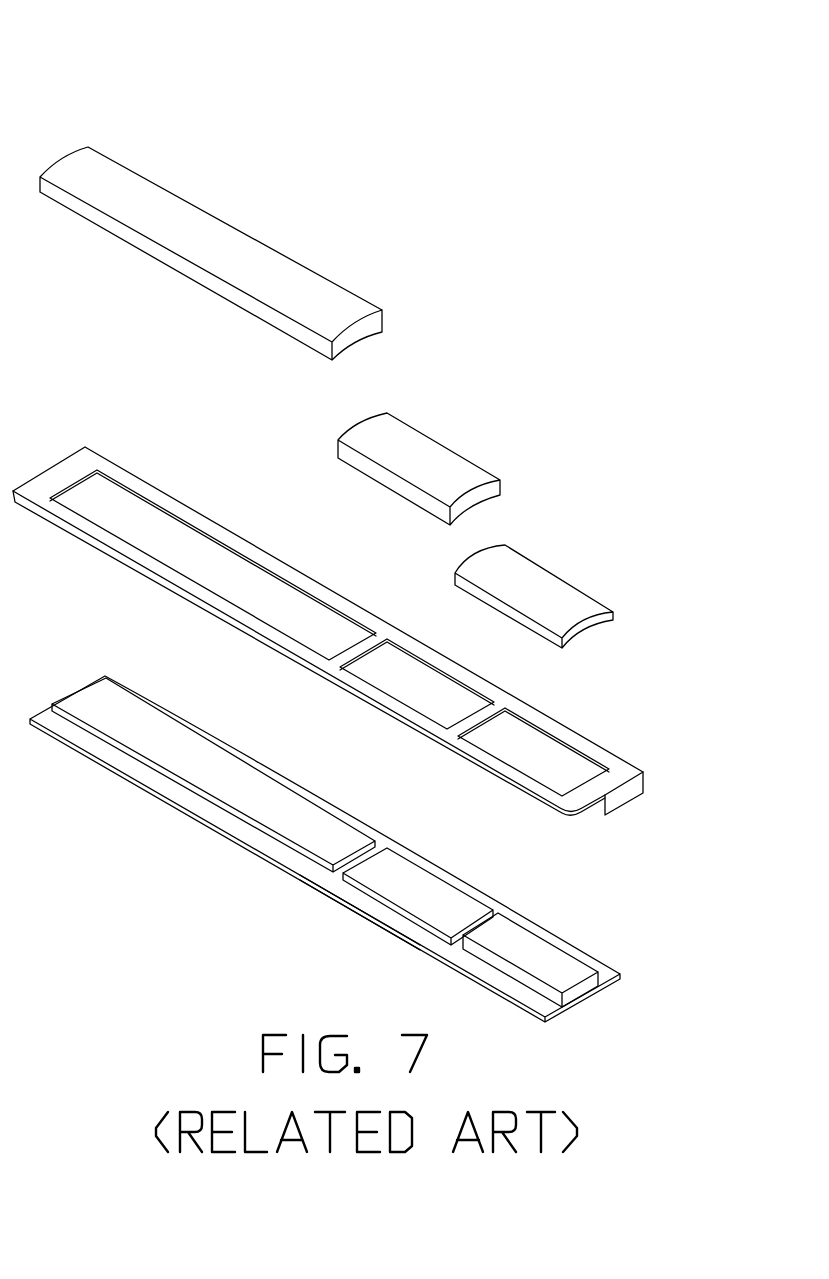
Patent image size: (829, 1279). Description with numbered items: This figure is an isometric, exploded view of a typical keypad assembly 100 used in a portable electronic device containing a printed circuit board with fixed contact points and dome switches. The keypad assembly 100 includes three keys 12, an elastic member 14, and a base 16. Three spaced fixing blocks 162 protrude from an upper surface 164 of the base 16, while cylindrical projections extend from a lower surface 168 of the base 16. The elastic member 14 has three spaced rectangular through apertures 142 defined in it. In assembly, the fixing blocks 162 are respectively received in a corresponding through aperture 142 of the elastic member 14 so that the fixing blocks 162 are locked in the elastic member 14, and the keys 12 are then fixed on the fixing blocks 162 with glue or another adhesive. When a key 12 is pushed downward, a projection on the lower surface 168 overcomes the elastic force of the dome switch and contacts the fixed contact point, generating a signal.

The keypad assembly 100 is at (383, 39).
The key 12 is at (313, 183).
The elastic member 14 is at (362, 624).
The through aperture 142 is at (137, 518).
The base 16 is at (367, 849).
The fixing block 162 is at (508, 935).
The upper surface 164 is at (98, 843).
The lower surface 168 is at (312, 945).